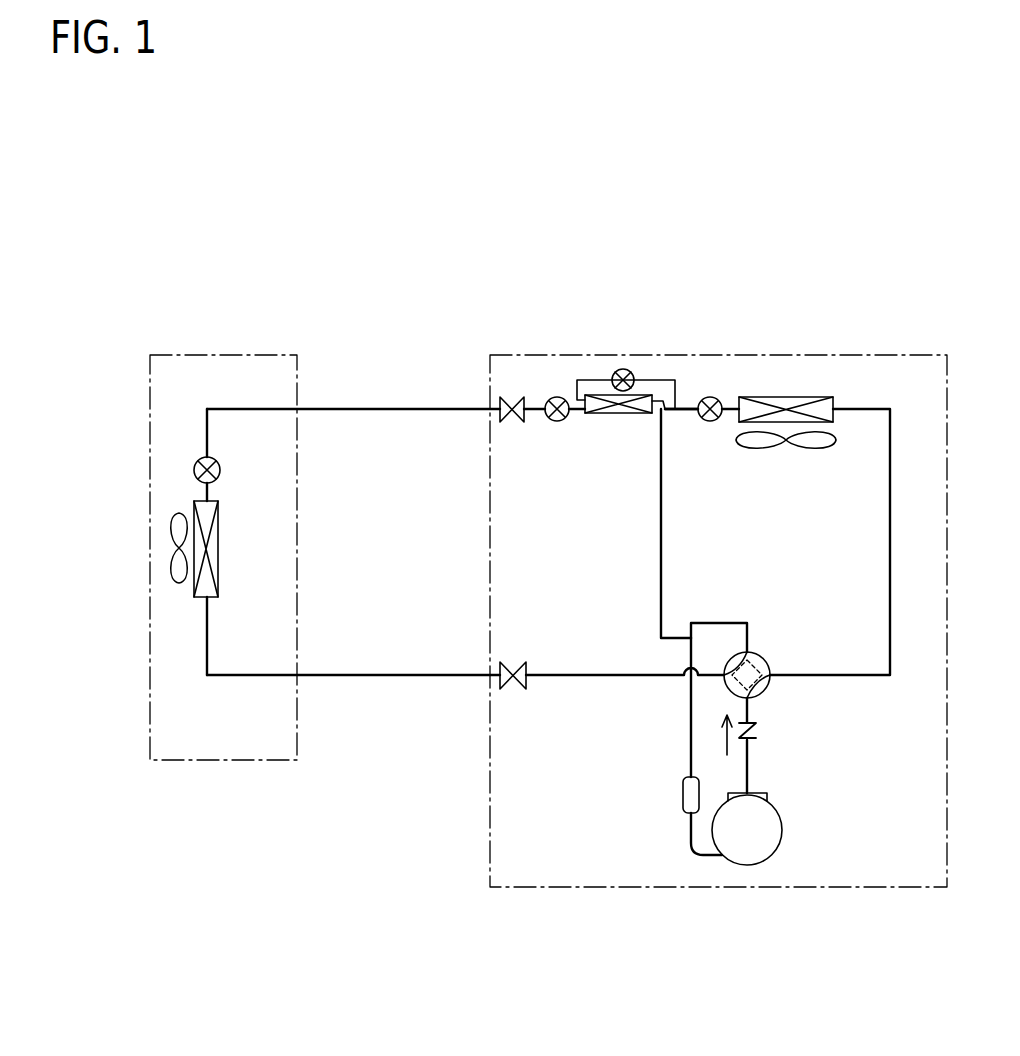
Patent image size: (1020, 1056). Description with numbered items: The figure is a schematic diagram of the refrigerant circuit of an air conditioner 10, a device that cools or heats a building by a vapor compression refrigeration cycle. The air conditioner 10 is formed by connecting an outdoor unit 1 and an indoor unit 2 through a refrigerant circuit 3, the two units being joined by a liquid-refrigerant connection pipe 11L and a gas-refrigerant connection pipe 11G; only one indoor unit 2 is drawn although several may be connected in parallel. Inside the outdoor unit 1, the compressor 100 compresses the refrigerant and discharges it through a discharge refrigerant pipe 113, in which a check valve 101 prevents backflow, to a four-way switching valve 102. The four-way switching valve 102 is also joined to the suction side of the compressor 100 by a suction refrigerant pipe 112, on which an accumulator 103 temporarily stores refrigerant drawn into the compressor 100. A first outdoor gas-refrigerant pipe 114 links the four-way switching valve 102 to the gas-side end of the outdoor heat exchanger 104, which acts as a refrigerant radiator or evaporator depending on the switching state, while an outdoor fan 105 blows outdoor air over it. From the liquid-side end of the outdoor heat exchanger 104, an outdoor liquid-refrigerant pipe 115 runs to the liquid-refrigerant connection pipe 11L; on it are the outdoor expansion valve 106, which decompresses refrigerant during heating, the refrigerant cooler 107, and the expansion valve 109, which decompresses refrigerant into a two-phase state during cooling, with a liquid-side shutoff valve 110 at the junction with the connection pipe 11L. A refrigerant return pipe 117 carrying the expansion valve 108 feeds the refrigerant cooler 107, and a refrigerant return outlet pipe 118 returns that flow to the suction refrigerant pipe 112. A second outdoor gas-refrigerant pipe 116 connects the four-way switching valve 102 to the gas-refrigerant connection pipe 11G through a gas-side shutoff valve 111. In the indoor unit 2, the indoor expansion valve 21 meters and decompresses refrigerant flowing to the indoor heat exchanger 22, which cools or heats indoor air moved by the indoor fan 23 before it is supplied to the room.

The air conditioner 10 is at (408, 262).
The outdoor unit 1 is at (690, 355).
The indoor unit 2 is at (196, 355).
The refrigerant circuit 3 is at (436, 381).
The liquid-refrigerant connection pipe 11L is at (387, 407).
The gas-refrigerant connection pipe 11G is at (387, 678).
The indoor expansion valve 21 is at (220, 468).
The indoor heat exchanger 22 is at (218, 532).
The indoor fan 23 is at (175, 533).
The compressor 100 is at (779, 848).
The check valve 101 is at (757, 732).
The four-way switching valve 102 is at (766, 660).
The accumulator 103 is at (682, 797).
The outdoor heat exchanger 104 is at (788, 397).
The outdoor fan 105 is at (803, 448).
The outdoor expansion valve 106 is at (717, 397).
The refrigerant cooler 107 is at (620, 413).
The expansion valve for returning refrigerant 108 is at (627, 369).
The expansion valve for adjusting liquid-refrigerant pressure 109 is at (557, 421).
The liquid-side shutoff valve 110 is at (505, 395).
The gas-side shutoff valve 111 is at (513, 661).
The suction refrigerant pipe 112 is at (689, 733).
The discharge refrigerant pipe 113 is at (748, 765).
The first outdoor gas-refrigerant pipe 114 is at (890, 555).
The outdoor liquid-refrigerant pipe 115 is at (685, 411).
The second outdoor gas-refrigerant pipe 116 is at (596, 673).
The refrigerant return pipe 117 is at (590, 378).
The refrigerant return outlet pipe 118 is at (661, 537).